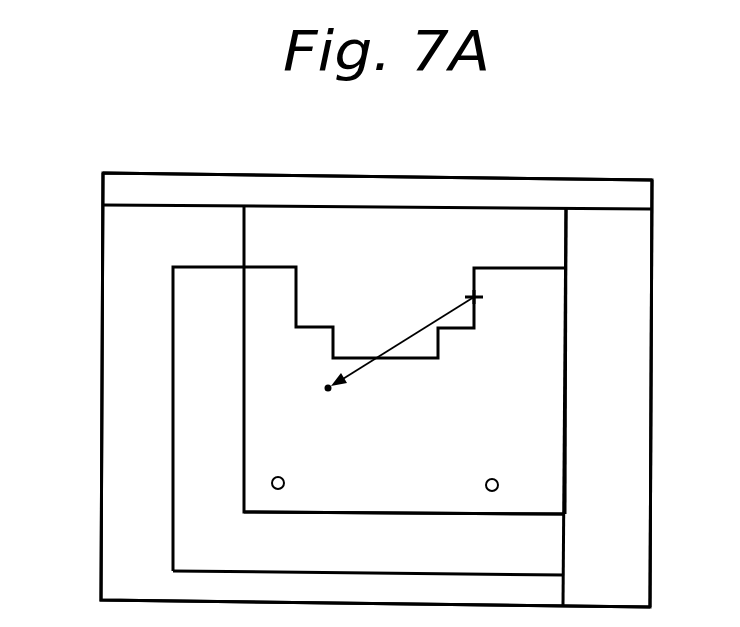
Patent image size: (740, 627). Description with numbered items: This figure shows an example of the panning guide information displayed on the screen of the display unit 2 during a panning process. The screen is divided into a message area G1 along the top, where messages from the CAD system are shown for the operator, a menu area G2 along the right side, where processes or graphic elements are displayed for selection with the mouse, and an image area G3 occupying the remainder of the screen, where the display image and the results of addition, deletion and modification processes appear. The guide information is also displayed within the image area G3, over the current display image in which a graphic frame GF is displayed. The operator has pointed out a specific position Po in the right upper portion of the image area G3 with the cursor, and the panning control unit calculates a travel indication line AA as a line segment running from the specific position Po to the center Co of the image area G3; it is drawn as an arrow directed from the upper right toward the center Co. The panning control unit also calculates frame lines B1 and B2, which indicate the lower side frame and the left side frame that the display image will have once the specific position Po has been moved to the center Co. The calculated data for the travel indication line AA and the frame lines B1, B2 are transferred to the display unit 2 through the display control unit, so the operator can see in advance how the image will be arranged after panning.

The display unit 2 is at (47, 110).
The message area G1 is at (595, 192).
The menu area G2 is at (643, 347).
The image area G3 is at (108, 560).
The guard frame GF is at (168, 287).
The frame line B1 is at (411, 512).
The frame line B2 is at (244, 358).
The travel indication line AA is at (413, 335).
The specific position Po is at (480, 303).
The center of the image area Co is at (324, 406).